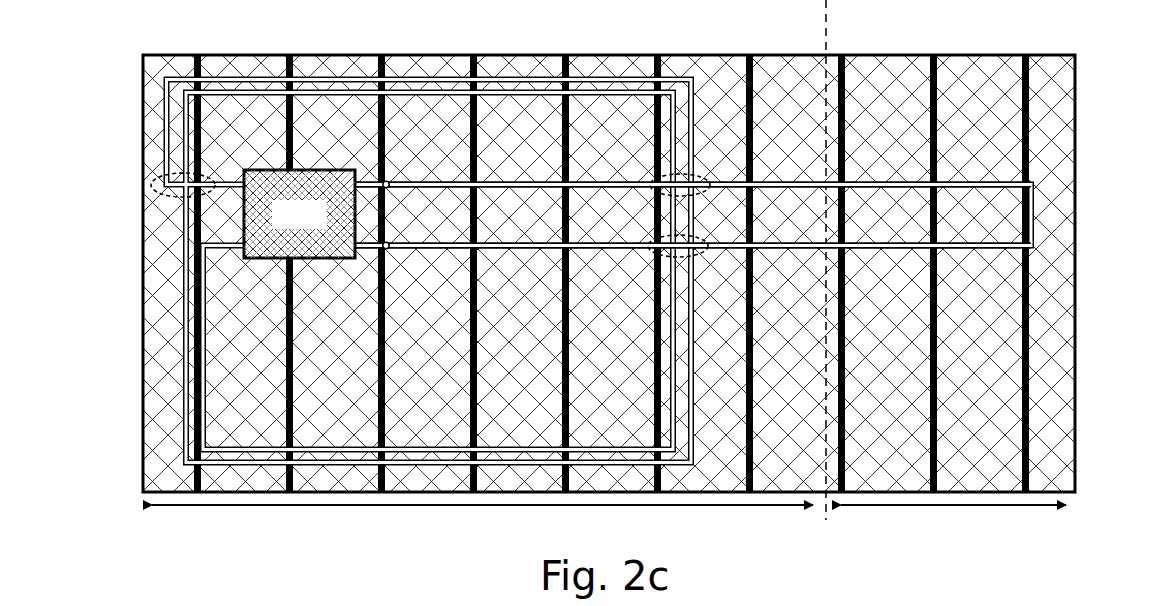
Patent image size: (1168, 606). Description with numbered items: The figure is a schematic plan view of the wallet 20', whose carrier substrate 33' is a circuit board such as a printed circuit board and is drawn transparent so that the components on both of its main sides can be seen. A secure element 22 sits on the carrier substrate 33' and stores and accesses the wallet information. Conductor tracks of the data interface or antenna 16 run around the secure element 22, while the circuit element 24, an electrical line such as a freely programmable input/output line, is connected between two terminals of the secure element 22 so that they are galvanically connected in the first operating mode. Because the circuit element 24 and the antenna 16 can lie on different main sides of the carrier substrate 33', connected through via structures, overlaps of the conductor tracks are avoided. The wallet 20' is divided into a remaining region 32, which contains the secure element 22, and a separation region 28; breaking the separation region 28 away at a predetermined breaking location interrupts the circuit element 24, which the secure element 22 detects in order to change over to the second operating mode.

The wallet 20' is at (88, 41).
The data interface or antenna 16 is at (187, 77).
The secure element 22 is at (299, 166).
The carrier substrate 33' is at (584, 273).
The circuit element 24 is at (1036, 207).
The remaining region 32 is at (482, 525).
The separation region 28 is at (953, 525).